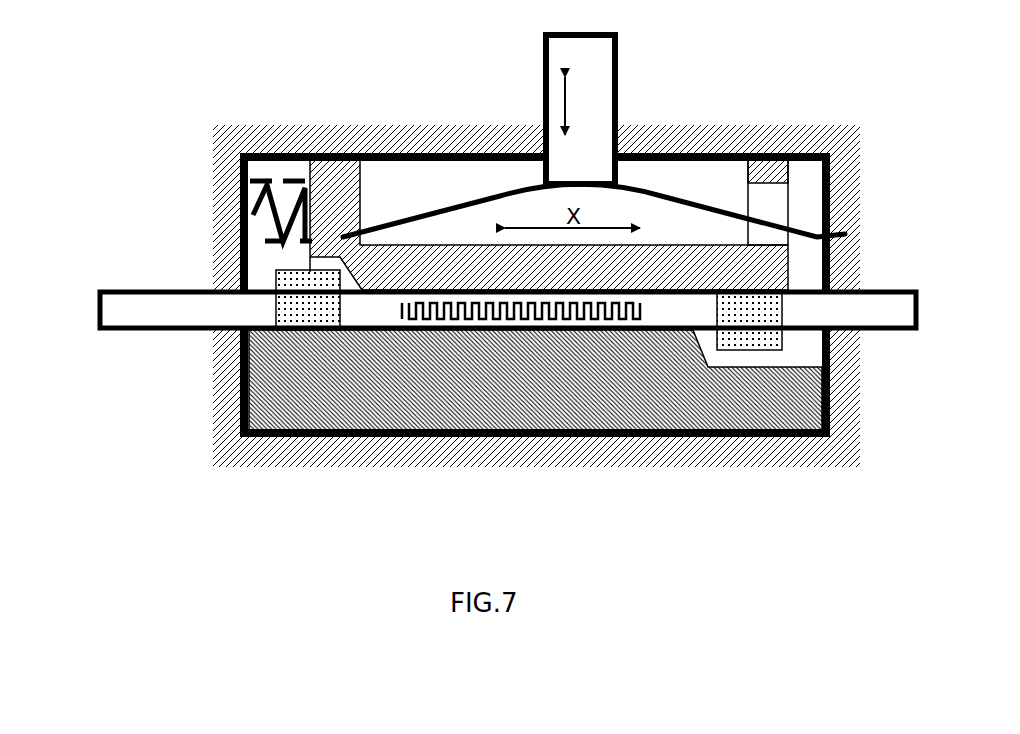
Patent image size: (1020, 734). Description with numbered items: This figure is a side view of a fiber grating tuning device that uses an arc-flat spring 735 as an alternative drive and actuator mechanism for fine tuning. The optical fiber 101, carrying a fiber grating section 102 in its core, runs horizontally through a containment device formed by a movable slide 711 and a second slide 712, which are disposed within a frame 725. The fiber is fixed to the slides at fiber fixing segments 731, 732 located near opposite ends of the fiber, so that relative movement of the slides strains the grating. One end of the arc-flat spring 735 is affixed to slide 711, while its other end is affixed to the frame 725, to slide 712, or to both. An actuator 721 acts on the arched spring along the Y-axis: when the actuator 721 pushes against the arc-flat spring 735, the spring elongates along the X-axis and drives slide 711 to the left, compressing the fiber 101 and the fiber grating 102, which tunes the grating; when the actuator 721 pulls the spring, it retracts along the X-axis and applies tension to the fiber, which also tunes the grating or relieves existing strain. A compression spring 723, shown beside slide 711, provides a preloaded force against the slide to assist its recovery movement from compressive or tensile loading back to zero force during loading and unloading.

The optical fiber 101 is at (137, 307).
The fiber grating section 102 is at (425, 310).
The slide 711 is at (338, 205).
The slide 712 is at (424, 400).
The actuator 721 is at (593, 70).
The compression spring 723 is at (280, 197).
The frame 725 is at (797, 153).
The fiber fixing segment 731 is at (742, 307).
The fiber fixing segment 732 is at (292, 318).
The arc-flat spring 735 is at (430, 212).